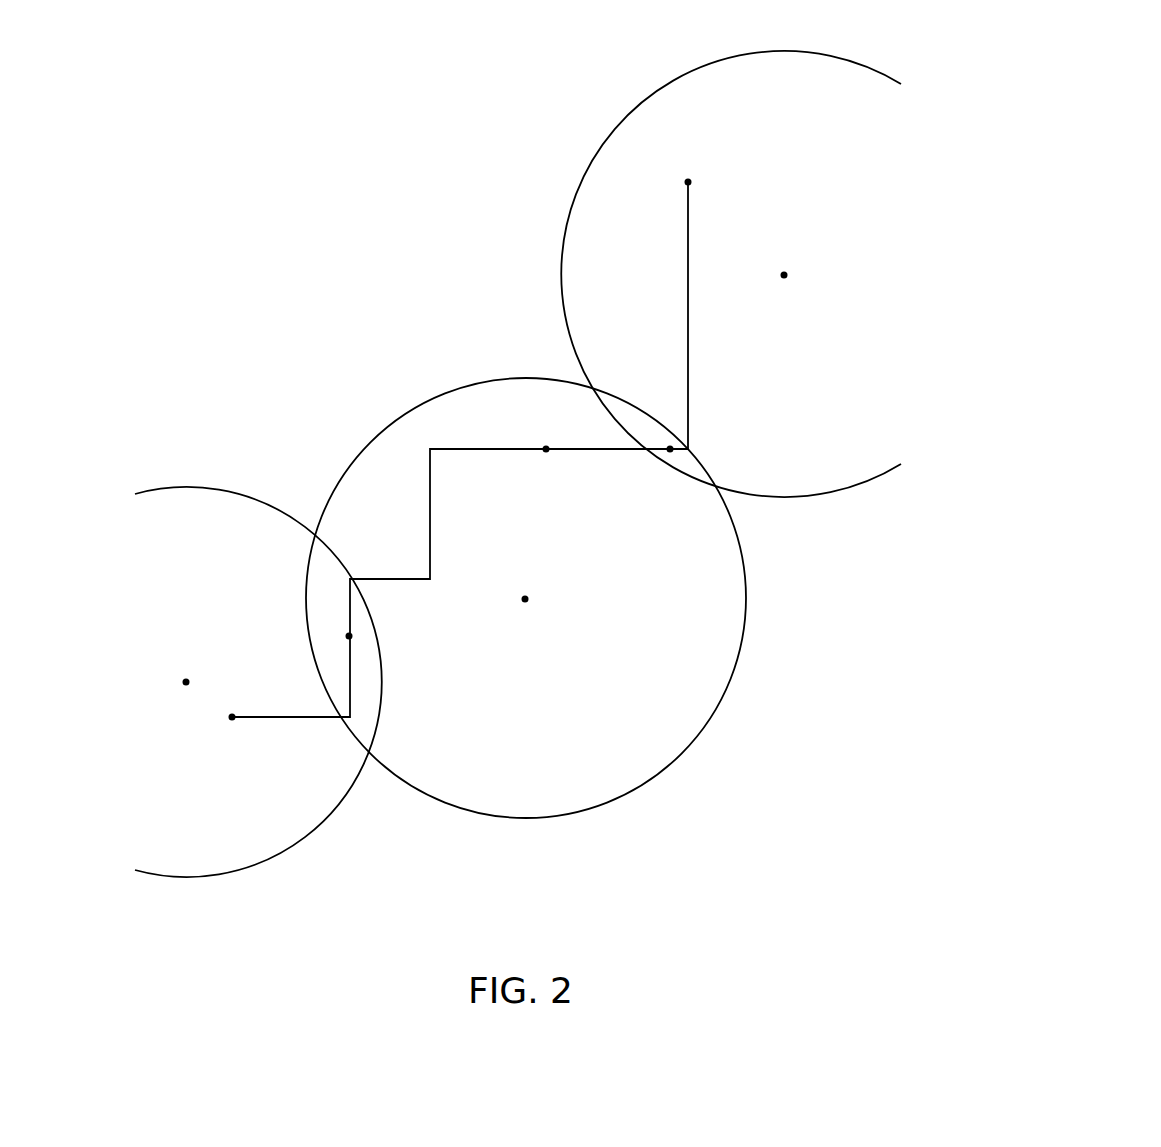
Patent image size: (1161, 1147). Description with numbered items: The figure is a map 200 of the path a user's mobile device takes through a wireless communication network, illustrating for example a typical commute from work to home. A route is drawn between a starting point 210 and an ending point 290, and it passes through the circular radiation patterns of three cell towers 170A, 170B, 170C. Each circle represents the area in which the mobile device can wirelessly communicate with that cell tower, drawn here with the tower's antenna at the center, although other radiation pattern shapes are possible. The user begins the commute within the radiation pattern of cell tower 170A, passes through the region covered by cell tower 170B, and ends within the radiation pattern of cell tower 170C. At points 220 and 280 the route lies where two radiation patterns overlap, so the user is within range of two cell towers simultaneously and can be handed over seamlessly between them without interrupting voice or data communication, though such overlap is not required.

The map 200 is at (335, 285).
The cell tower 170A is at (186, 682).
The cell tower 170B is at (525, 599).
The cell tower 170C is at (784, 275).
The starting point 210 is at (232, 717).
The point 220 is at (349, 636).
The point 280 is at (670, 449).
The ending point 290 is at (688, 182).